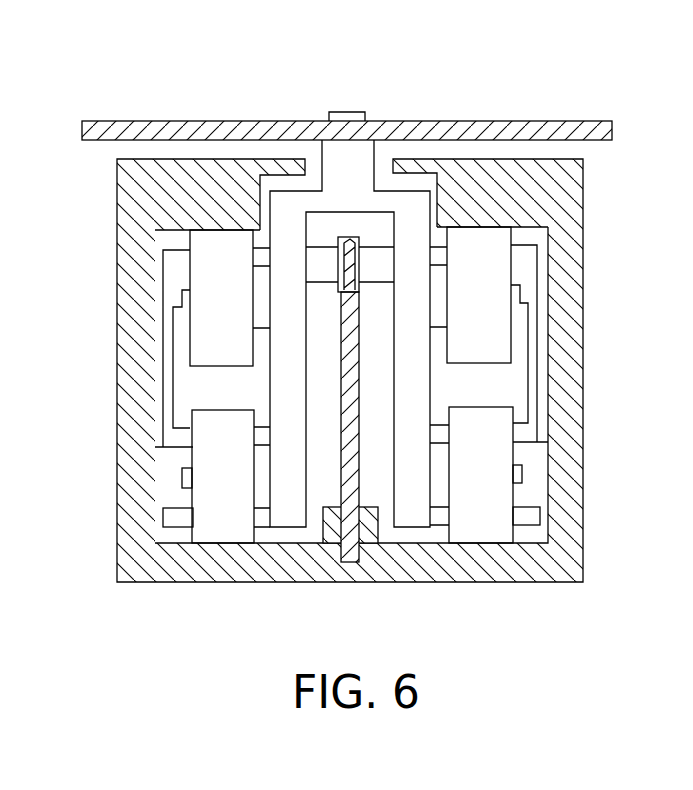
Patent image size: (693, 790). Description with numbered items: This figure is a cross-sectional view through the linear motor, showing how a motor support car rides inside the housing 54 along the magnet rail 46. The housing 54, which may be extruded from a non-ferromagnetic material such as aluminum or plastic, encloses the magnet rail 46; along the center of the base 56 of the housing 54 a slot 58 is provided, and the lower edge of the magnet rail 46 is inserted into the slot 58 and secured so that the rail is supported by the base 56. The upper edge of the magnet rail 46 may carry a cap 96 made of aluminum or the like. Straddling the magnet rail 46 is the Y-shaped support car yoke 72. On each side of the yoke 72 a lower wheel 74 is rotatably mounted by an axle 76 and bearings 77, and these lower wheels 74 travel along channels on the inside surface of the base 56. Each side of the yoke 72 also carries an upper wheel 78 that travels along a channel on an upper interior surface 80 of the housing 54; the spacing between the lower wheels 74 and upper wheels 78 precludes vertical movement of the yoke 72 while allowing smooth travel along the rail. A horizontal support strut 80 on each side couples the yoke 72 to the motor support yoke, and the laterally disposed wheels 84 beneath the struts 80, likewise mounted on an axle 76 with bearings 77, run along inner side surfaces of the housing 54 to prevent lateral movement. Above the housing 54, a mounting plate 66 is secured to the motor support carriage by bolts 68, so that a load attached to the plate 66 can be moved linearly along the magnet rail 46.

The magnet rail 46 is at (342, 475).
The housing 54 is at (150, 184).
The base 56 is at (478, 562).
The slot 58 is at (386, 537).
The mounting plate 66 is at (577, 118).
The bolts 68 is at (350, 110).
The support car yoke 72 is at (285, 210).
The lower wheel 74 is at (218, 525).
The axle 76 is at (180, 297).
The bearings 77 is at (261, 303).
The upper wheel 78 is at (205, 243).
The horizontal support strut 80 is at (213, 231).
The laterally disposed wheel 84 is at (165, 490).
The cap 96 is at (350, 237).